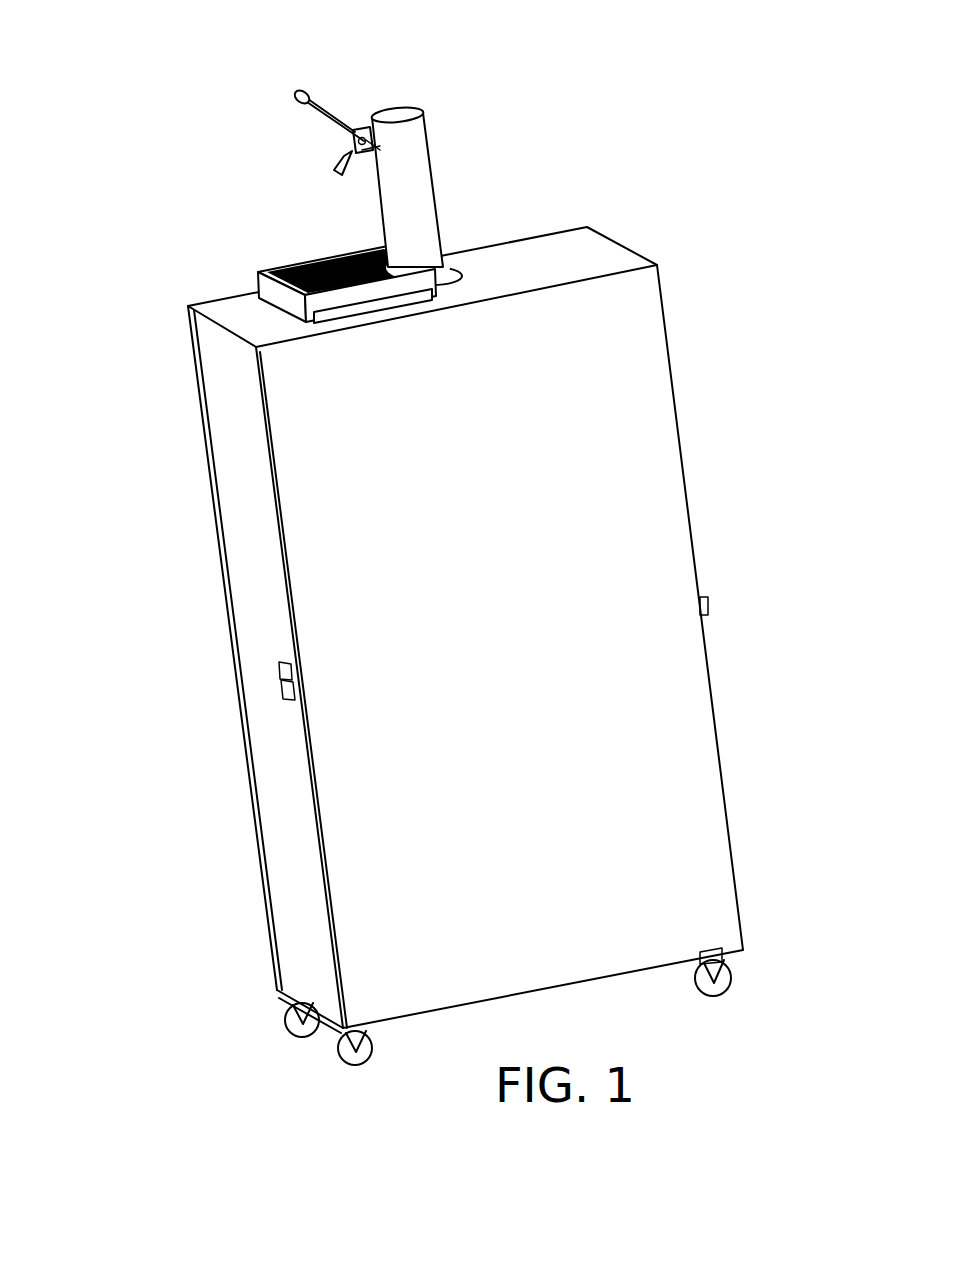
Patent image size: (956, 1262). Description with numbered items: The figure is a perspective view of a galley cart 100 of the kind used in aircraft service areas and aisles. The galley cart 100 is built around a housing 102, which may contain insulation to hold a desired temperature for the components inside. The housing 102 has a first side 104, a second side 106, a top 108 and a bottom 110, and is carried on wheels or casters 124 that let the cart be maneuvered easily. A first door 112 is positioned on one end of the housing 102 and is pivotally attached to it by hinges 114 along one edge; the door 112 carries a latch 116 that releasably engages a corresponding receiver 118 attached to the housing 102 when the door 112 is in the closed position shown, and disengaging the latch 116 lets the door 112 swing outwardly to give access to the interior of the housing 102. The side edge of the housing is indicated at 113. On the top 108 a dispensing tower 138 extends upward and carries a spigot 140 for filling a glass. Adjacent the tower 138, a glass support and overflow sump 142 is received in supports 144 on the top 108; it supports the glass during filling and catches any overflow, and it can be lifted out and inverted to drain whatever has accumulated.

The galley cart 100 is at (222, 236).
The housing 102 is at (565, 225).
The first side 104 is at (652, 607).
The second side 106 is at (205, 465).
The top 108 is at (583, 263).
The bottom 110 is at (600, 985).
The first door 112 is at (275, 800).
The side edge 113 is at (680, 445).
The hinges 114 is at (228, 653).
The latch 116 is at (280, 693).
The receivers 118 is at (297, 700).
The casters 124 is at (730, 980).
The dispensing tower 138 is at (390, 185).
The spigot 140 is at (350, 127).
The glass support and overflow sump 142 is at (283, 268).
The supports 144 is at (383, 308).